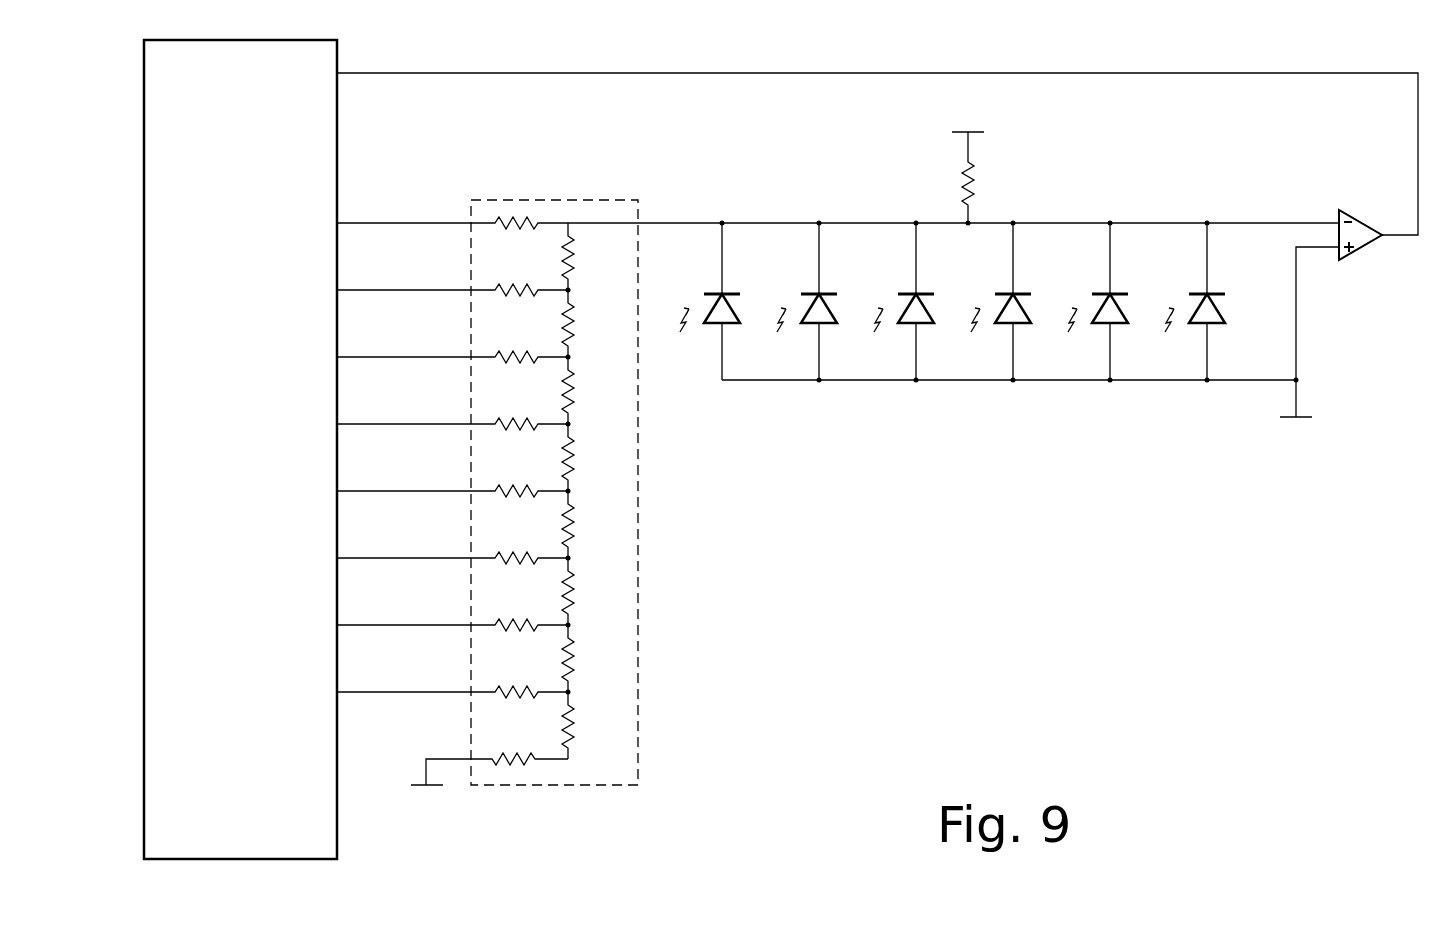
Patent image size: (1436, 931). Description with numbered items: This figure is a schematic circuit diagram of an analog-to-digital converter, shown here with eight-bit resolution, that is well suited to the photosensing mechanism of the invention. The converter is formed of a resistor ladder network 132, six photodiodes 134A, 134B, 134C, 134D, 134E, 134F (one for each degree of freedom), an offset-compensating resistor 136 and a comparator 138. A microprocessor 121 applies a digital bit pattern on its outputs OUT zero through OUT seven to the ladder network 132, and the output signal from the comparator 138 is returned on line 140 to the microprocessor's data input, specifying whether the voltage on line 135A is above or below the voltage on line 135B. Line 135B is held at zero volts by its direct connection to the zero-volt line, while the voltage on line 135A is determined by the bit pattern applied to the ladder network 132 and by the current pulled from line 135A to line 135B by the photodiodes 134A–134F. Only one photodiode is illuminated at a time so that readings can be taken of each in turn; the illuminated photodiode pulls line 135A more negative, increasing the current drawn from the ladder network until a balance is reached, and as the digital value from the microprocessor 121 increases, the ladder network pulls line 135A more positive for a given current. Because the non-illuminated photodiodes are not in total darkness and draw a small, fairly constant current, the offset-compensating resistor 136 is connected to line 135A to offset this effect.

The microprocessor 121 is at (228, 813).
The R-2R ladder network 132 is at (638, 448).
The photodiode 134A is at (714, 326).
The photodiode 134B is at (811, 326).
The photodiode 134C is at (908, 326).
The photodiode 134D is at (1005, 326).
The photodiode 134E is at (1102, 326).
The photodiode 134F is at (1199, 326).
The line 135A is at (1133, 222).
The line 135B is at (1248, 380).
The offset-compensating resistor 136 is at (958, 178).
The comparator 138 is at (1365, 249).
The line 140 is at (833, 73).